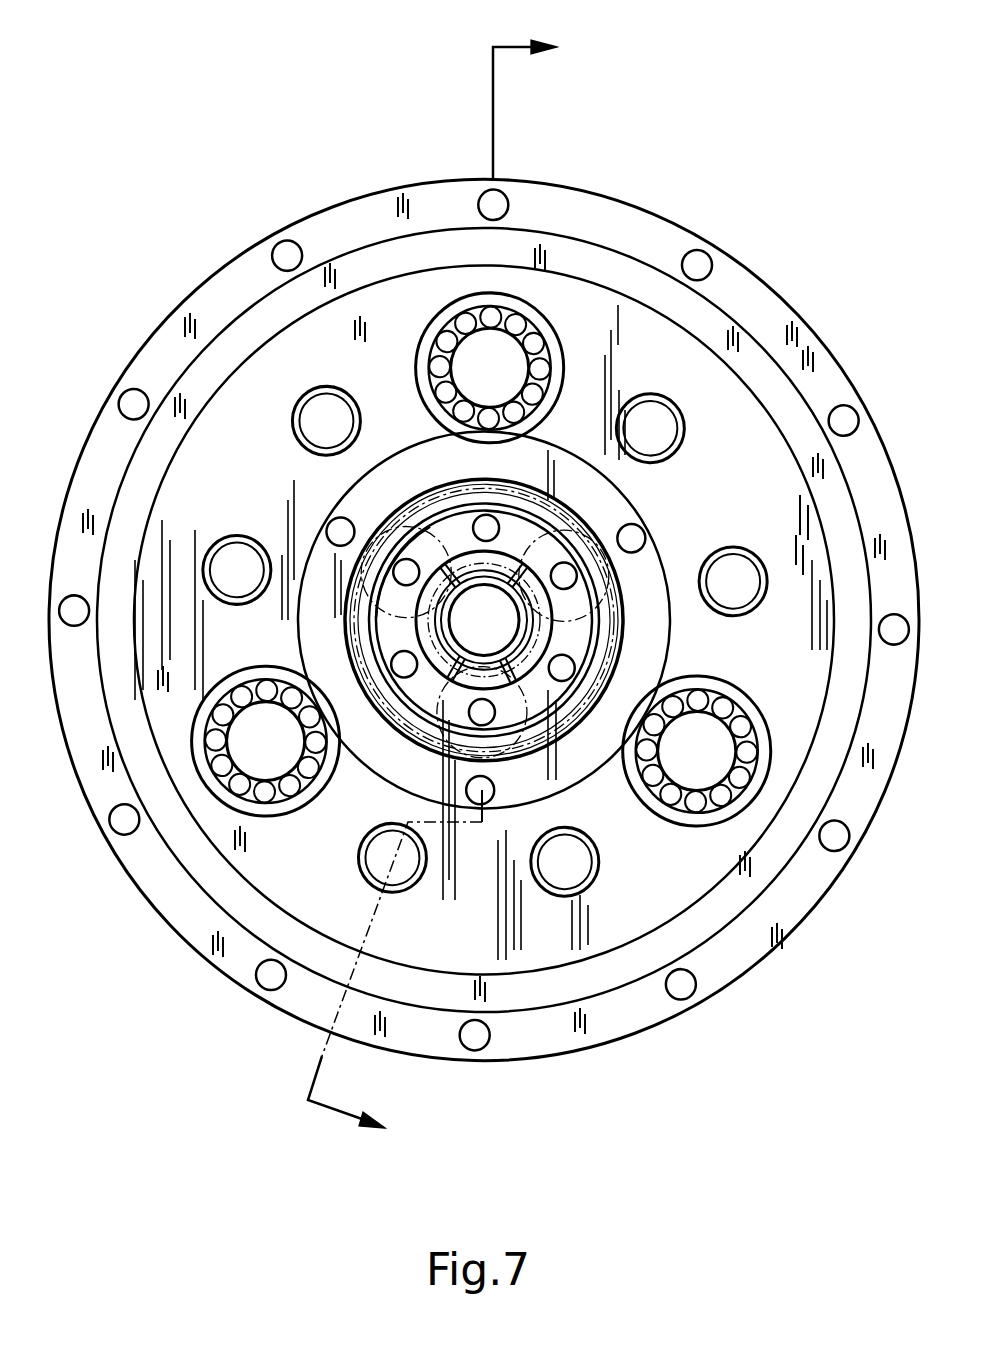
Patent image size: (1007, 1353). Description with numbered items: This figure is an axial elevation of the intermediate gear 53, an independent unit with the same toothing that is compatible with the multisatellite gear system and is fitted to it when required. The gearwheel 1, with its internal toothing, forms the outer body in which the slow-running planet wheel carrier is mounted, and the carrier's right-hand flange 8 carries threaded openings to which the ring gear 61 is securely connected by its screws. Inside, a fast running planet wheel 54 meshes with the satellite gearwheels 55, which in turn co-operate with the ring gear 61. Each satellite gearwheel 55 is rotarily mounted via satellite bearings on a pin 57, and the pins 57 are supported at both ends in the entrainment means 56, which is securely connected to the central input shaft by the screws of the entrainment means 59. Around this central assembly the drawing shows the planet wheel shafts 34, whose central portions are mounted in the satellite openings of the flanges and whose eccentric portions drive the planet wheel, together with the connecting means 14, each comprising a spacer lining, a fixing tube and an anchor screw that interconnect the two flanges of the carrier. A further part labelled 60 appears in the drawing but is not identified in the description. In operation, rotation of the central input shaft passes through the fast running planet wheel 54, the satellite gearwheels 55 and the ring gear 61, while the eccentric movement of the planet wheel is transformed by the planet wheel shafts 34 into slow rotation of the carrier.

The gearwheel 1 is at (700, 238).
The right-hand flange 8 is at (685, 383).
The connecting means 14 is at (222, 533).
The planet wheel shaft 34 is at (471, 370).
The intermediate gear 53 is at (578, 447).
The fast running planet wheel 54 is at (448, 677).
The satellite gearwheels 55 is at (392, 502).
The entrainment means 56 is at (535, 693).
The pins 57 is at (343, 530).
The screws of the entrainment means 59 is at (563, 668).
The retaining ring 60 is at (420, 467).
The ring gear 61 is at (632, 540).